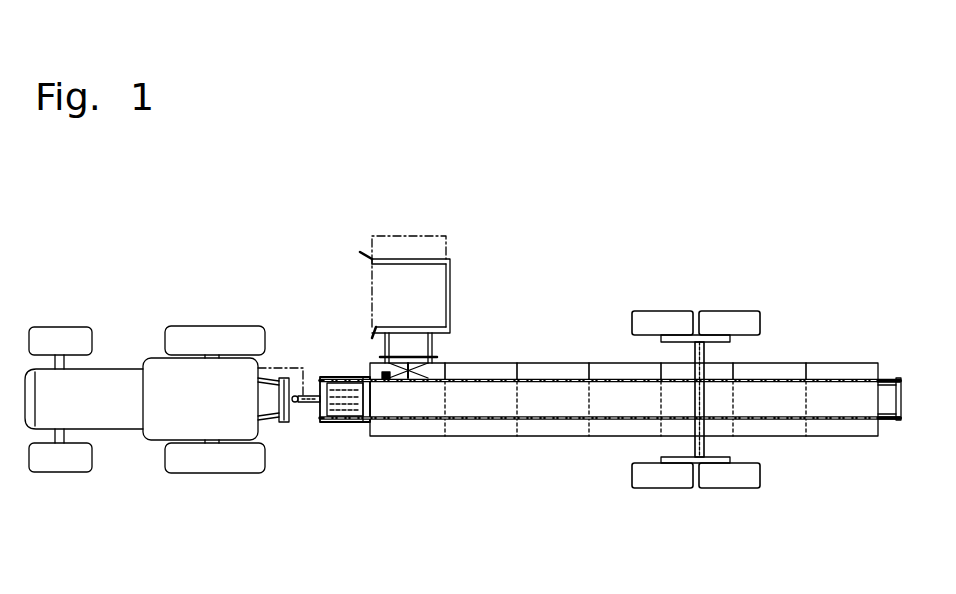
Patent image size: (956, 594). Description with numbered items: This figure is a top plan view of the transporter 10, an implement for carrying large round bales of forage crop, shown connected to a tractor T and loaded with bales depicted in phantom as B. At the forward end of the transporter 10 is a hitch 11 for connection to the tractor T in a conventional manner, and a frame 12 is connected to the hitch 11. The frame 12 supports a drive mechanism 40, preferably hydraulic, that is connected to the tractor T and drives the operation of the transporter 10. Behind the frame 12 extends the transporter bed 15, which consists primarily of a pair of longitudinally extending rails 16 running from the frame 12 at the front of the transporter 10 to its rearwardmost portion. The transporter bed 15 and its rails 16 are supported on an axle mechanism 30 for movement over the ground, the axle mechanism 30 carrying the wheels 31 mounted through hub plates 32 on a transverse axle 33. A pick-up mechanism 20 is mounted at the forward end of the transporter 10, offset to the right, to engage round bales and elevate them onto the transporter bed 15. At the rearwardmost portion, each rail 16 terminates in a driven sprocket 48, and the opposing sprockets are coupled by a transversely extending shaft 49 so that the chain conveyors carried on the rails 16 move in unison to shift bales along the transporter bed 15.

The transporter 10 is at (529, 219).
The hitch 11 is at (294, 405).
The frame 12 is at (380, 360).
The transporter bed 15 is at (579, 347).
The rails 16 is at (606, 385).
The pick-up mechanism 20 is at (368, 219).
The axle mechanism 30 is at (780, 476).
The wheels 31 is at (732, 315).
The hub plate 32 is at (725, 343).
The axle 33 is at (704, 357).
The drive mechanism 40 is at (339, 428).
The driven sprocket 48 is at (900, 380).
The shaft 49 is at (905, 409).
The bale / load position B is at (425, 236).
The tractor T is at (78, 471).